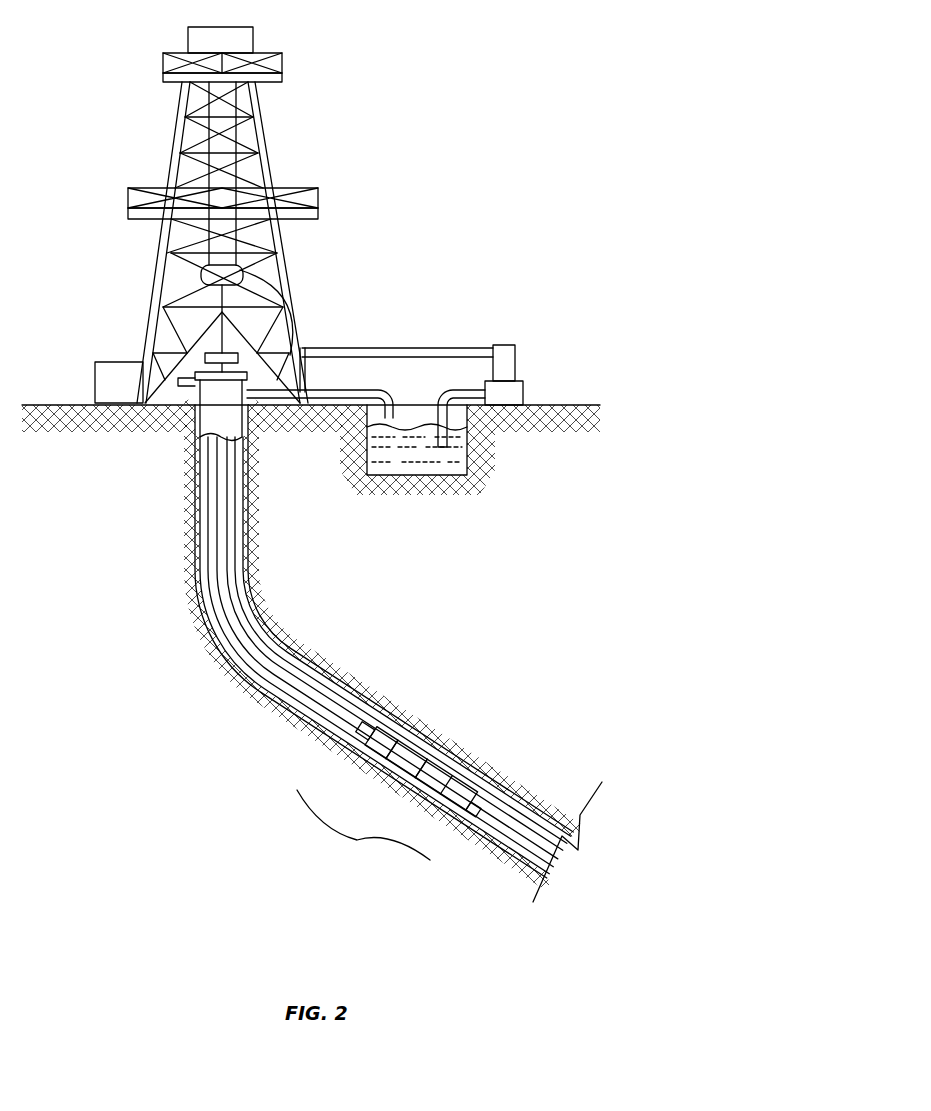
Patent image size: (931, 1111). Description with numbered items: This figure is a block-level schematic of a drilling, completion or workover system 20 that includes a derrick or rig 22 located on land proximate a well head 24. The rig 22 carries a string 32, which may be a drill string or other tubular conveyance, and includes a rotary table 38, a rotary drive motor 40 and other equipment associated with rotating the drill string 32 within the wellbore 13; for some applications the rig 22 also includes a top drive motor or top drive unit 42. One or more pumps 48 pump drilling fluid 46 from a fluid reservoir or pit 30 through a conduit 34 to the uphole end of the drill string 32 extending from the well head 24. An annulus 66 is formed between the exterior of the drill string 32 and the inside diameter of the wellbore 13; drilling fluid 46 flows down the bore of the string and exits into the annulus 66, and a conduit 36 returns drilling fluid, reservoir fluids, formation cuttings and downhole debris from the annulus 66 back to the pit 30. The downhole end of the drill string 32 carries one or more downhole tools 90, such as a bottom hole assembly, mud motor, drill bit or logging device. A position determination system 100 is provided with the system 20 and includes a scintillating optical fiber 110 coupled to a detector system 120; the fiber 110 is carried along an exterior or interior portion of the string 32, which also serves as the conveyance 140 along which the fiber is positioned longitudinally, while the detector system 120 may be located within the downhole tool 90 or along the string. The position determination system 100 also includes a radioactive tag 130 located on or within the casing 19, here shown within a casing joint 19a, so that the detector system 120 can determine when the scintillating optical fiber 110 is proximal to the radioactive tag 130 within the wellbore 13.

The drilling, completion, workover system 20 is at (320, 663).
The derrick or rig 22 is at (183, 129).
The top drive motor or top drive unit 42 is at (202, 238).
The rotary table 38 is at (285, 365).
The rotary drive motor 40 is at (95, 383).
The well head 24 is at (200, 392).
The conduit 34 is at (408, 347).
The conduit 36 is at (353, 392).
The pump 48 is at (517, 362).
The drilling fluid 46 is at (440, 477).
The fluid reservoir or pit 30 is at (390, 477).
The drill string 32 is at (220, 660).
The annulus 66 is at (205, 590).
The conveyance 140 is at (213, 495).
The casing 19 is at (272, 643).
The casing joint 19a is at (420, 698).
The downhole tool 90 is at (433, 738).
The radioactive tag 130 is at (368, 731).
The scintillating optical fiber 110 is at (390, 770).
The detector system 120 is at (447, 803).
The position determination system 100 is at (363, 828).
The wellbore 13 is at (497, 768).